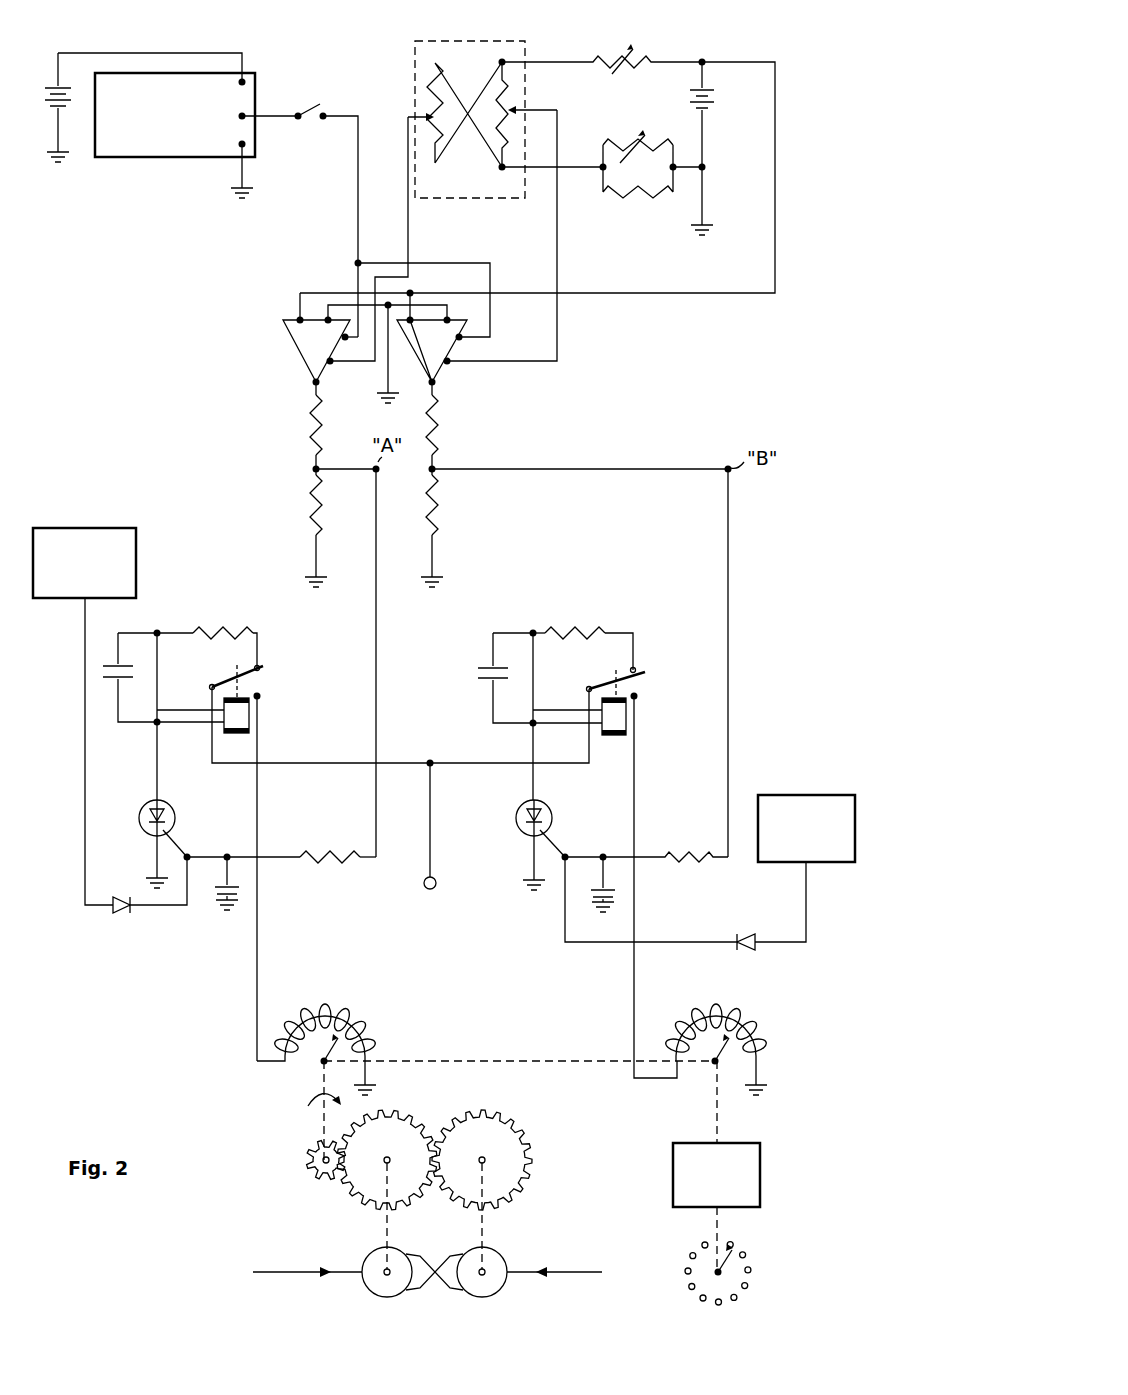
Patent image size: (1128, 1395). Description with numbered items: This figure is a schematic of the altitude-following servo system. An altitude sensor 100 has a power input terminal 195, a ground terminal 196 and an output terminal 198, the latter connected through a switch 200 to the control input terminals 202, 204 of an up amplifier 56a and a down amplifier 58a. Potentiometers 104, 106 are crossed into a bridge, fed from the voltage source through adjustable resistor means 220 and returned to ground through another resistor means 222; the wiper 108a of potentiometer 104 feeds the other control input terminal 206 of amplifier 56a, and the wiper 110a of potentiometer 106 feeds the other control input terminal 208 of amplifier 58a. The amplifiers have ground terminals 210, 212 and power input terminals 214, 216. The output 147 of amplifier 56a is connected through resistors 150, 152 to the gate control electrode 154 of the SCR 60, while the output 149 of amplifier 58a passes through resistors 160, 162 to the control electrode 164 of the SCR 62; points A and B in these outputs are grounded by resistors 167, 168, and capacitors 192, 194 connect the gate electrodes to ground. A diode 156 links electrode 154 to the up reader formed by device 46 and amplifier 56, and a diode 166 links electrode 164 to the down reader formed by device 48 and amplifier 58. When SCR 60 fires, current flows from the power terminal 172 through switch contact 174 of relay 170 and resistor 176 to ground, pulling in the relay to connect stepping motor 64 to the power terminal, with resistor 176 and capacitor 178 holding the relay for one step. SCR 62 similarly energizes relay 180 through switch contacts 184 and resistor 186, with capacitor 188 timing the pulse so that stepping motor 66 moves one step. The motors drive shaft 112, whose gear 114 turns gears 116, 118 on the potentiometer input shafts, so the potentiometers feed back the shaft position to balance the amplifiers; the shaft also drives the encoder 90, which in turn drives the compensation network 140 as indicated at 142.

The altitude sensor 100 is at (163, 158).
The power input terminal 195 is at (246, 80).
The output terminal 198 is at (246, 113).
The ground terminal 196 is at (246, 146).
The switch 200 is at (328, 101).
The potentiometer 104 is at (422, 93).
The potentiometer 106 is at (506, 90).
The wiper 108a is at (408, 115).
The wiper 110a is at (542, 110).
The resistor means 220 is at (602, 50).
The resistor means 222 is at (638, 215).
The up amplifier 56a is at (300, 352).
The down amplifier 58a is at (455, 350).
The power input terminal 214 is at (300, 316).
The ground terminal 210 is at (328, 316).
The ground terminal 212 is at (452, 318).
The control input terminal 204 is at (463, 340).
The control input terminal 202 is at (347, 341).
The control input terminal 206 is at (333, 366).
The power input terminal 216 is at (417, 326).
The control input terminal 208 is at (450, 366).
The output 147 is at (313, 383).
The output 149 is at (436, 386).
The resistor 150 is at (312, 420).
The resistor 160 is at (440, 430).
The resistor 167 is at (312, 500).
The resistor 168 is at (440, 508).
The device 46 is at (129, 563).
The amplifier 56 is at (138, 562).
The device 48 is at (819, 805).
The amplifier 58 is at (815, 794).
The capacitor 178 is at (106, 663).
The resistor 176 is at (222, 632).
The switch contact 174 is at (263, 670).
The relay 170 is at (243, 720).
The SCR 60 is at (172, 810).
The gate control electrode 154 is at (180, 845).
The resistor 152 is at (322, 868).
The diode 156 is at (120, 910).
The capacitor 192 is at (215, 888).
The power terminal 172 is at (437, 882).
The capacitor 188 is at (485, 667).
The resistor 186 is at (580, 632).
The relay switch contacts 184 is at (645, 675).
The relay 180 is at (615, 737).
The SCR 62 is at (520, 806).
The control electrode 164 is at (560, 846).
The resistor 162 is at (682, 855).
The capacitor 194 is at (598, 900).
The diode 166 is at (745, 935).
The stepping motor 64 is at (335, 1027).
The stepping motor 66 is at (730, 1027).
The shaft 112 is at (322, 1123).
The gear 114 is at (308, 1155).
The gear 116 is at (404, 1136).
The gear 118 is at (500, 1136).
The encoder 90 is at (762, 1156).
The drive from encoder 142 is at (720, 1228).
The compensation network 140 is at (768, 1270).